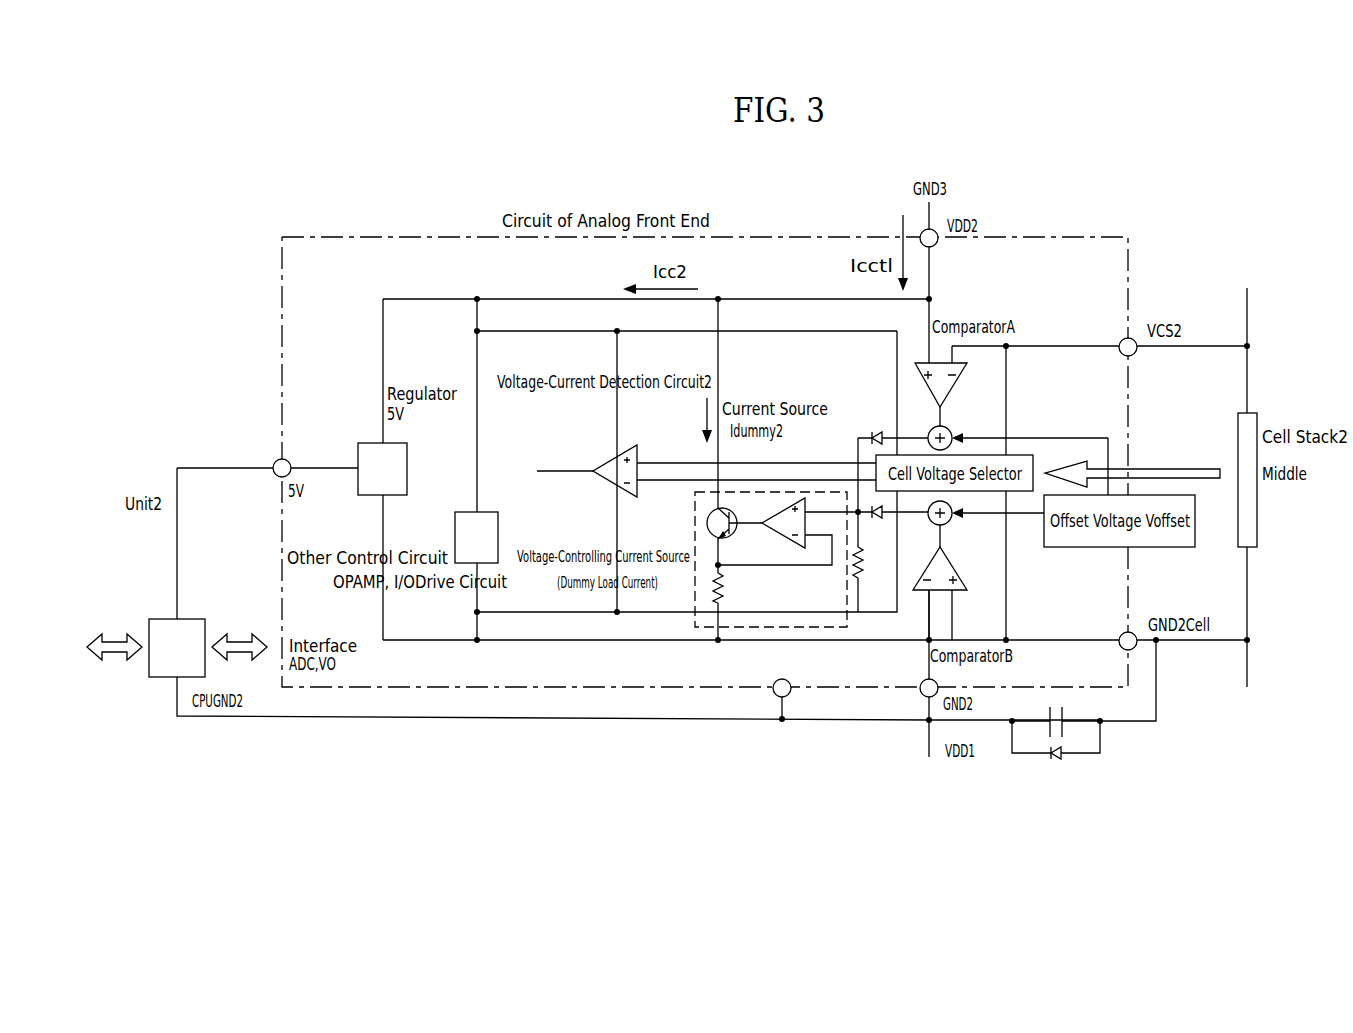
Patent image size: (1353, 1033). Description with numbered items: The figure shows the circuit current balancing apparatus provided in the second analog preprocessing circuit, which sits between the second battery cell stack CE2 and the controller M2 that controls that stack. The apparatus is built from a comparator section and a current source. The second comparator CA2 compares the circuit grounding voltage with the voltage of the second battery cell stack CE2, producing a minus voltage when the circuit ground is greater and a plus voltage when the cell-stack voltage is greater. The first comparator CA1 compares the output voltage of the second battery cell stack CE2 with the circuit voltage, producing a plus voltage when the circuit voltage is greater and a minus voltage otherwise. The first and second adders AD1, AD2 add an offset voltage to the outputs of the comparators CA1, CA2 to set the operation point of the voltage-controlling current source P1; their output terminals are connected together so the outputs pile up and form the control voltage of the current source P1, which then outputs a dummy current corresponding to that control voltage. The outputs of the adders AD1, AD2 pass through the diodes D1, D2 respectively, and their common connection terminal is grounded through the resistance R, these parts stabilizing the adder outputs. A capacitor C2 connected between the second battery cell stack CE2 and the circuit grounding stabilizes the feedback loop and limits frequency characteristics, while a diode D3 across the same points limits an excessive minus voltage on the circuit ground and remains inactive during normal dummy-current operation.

The voltage-controlling current source P1 is at (694, 519).
The diode D1 is at (893, 424).
The diode D2 is at (893, 526).
The diode D3 is at (1056, 753).
The resistance R is at (865, 563).
The capacitor C2 is at (1084, 688).
The first comparator CA1 is at (955, 376).
The second comparator CA2 is at (955, 572).
The first adder AD1 is at (949, 429).
The second adder AD2 is at (950, 522).
The second battery cell stack CE2 is at (1257, 530).
The controller M2 is at (158, 677).